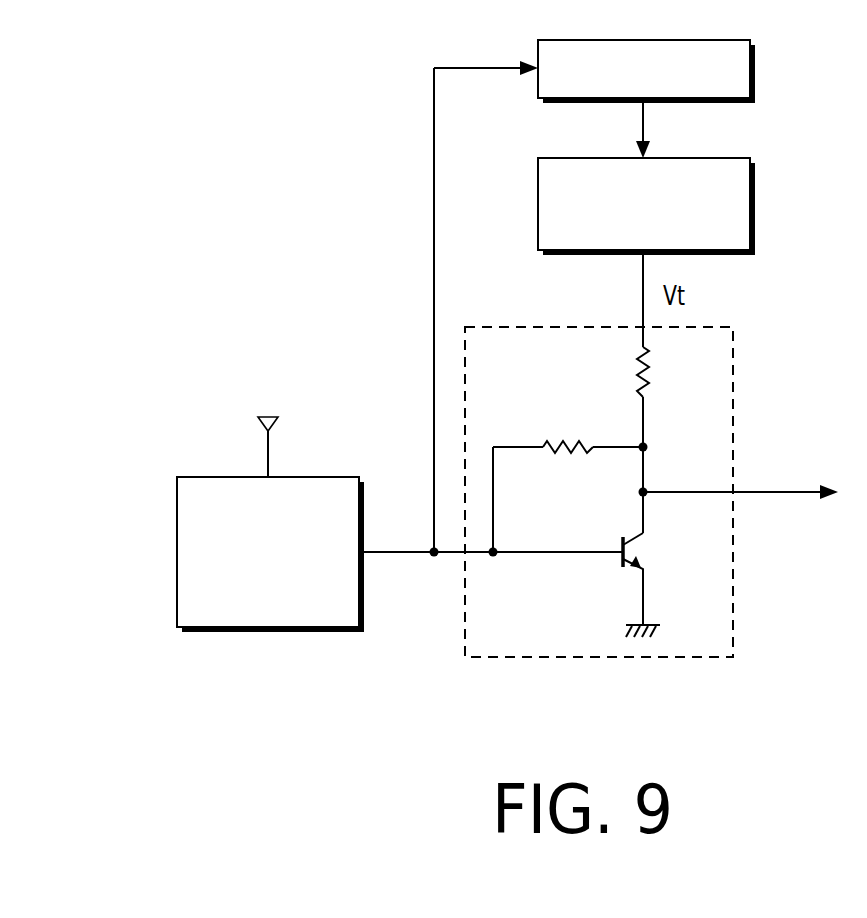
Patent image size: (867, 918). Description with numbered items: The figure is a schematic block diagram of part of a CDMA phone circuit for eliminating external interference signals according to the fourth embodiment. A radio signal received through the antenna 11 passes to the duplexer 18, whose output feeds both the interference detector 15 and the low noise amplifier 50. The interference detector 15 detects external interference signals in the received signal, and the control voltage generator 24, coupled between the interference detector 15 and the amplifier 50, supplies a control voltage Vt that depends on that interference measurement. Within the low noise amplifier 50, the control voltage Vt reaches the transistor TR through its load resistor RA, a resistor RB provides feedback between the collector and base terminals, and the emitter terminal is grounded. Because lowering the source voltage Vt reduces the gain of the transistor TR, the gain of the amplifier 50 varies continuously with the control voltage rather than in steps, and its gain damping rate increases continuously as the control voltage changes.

The antenna 11 is at (268, 417).
The interference detector 15 is at (752, 70).
The duplexer 18 is at (177, 552).
The control voltage generator 24 is at (752, 205).
The low noise amplifier 50 is at (733, 400).